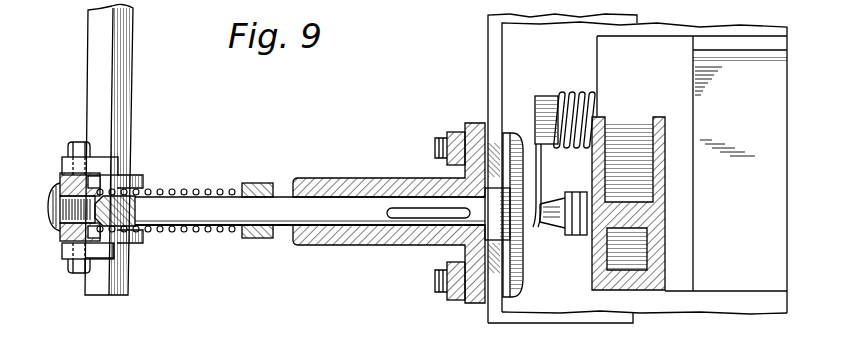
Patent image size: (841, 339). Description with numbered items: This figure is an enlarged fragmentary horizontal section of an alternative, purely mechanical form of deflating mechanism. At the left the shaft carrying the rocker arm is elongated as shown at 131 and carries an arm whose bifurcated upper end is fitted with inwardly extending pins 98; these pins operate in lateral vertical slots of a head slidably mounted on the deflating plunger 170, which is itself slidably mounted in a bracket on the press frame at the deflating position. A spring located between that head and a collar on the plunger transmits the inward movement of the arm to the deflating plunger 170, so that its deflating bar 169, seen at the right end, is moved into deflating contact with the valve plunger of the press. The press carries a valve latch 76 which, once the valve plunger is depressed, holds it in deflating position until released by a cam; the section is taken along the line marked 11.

The upright post 131 is at (114, 85).
The nuts 98 is at (60, 172).
The hub / bearing sleeve 170 is at (332, 218).
The plate 169 is at (510, 280).
The valve spring and valve stem 76 is at (568, 93).
The section line 11 is at (532, 72).